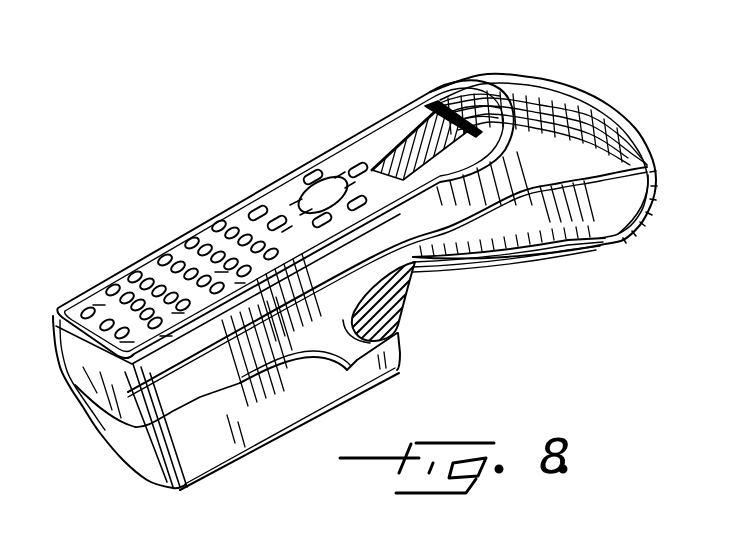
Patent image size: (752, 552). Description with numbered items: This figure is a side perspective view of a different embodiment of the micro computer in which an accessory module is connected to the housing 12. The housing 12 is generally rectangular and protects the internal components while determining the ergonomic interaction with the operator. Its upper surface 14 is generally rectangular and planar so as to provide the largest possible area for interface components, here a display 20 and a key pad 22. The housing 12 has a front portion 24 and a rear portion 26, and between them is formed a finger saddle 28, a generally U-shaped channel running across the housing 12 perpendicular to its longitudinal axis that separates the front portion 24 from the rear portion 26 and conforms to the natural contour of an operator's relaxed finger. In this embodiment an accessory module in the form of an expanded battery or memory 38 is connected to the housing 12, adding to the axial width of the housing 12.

The housing 12 is at (602, 106).
The upper surface 14 is at (266, 206).
The display 20 is at (388, 128).
The key pad 22 is at (140, 236).
The front portion 24 is at (640, 213).
The rear portion 26 is at (140, 425).
The finger saddle 28 is at (400, 300).
The expanded battery or memory 38 is at (212, 456).